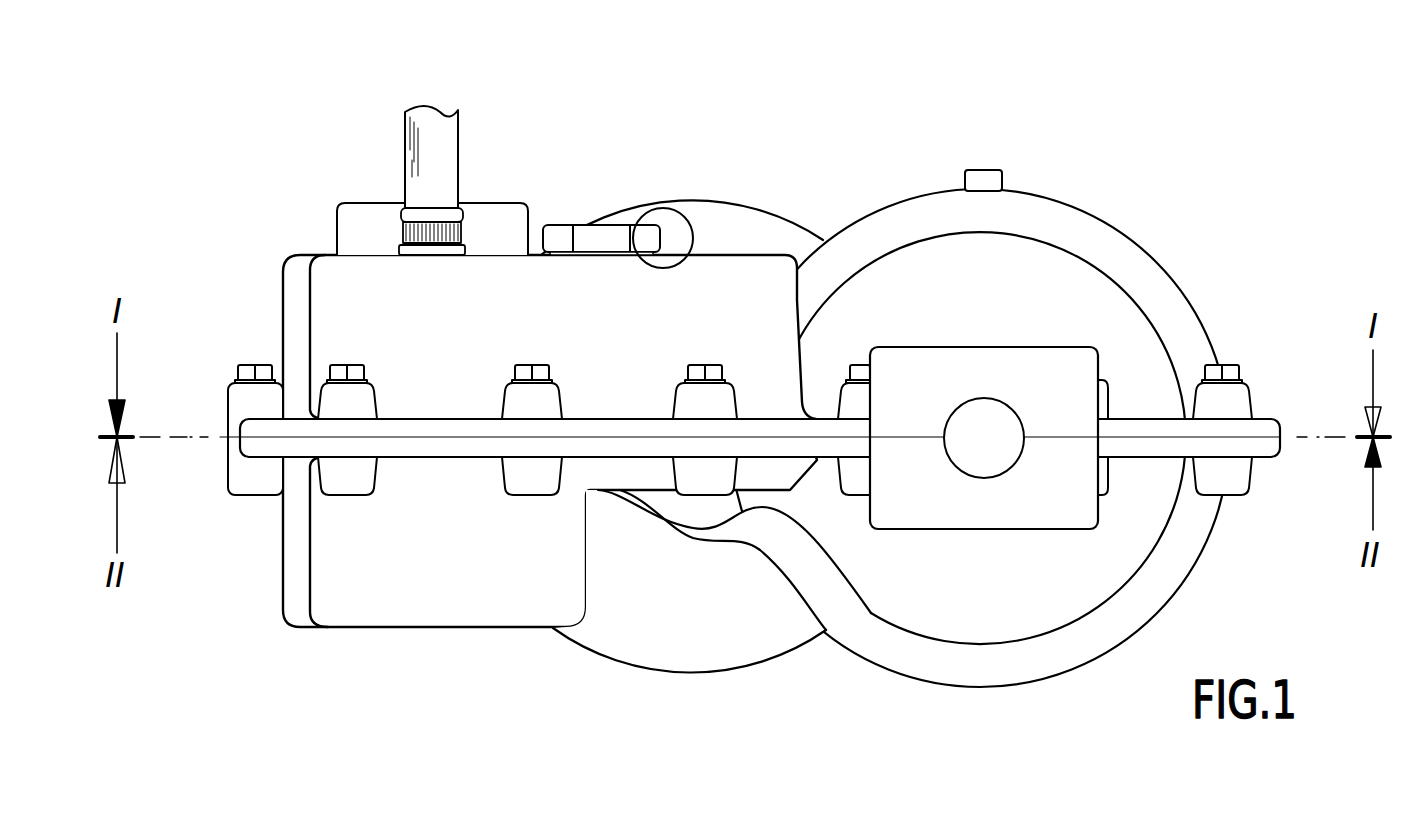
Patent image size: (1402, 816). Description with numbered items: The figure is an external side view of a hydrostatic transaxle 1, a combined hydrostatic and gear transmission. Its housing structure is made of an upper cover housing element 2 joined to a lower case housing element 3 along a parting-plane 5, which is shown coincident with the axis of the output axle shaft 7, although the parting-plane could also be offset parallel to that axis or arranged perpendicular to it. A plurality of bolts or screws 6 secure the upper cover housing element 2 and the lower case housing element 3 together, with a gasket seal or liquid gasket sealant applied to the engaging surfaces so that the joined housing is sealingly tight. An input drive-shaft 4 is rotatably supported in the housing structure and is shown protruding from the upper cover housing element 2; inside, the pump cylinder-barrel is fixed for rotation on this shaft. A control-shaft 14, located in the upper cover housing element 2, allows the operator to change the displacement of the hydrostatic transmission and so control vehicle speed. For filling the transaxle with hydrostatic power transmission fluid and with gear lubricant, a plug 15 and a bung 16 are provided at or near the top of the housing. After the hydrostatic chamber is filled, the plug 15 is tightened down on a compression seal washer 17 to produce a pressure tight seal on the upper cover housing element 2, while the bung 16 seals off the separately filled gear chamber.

The hydrostatic transaxle 1 is at (1200, 128).
The upper cover housing element 2 is at (728, 218).
The lower case housing element 3 is at (720, 645).
The input drive-shaft 4 is at (441, 164).
The parting-plane 5 is at (208, 443).
The bolts or screws 6 is at (247, 370).
The output axle shaft 7 is at (975, 454).
The control-shaft 14 is at (420, 236).
The plug 15 is at (595, 233).
The bung 16 is at (985, 170).
The compression seal washer 17 is at (667, 208).